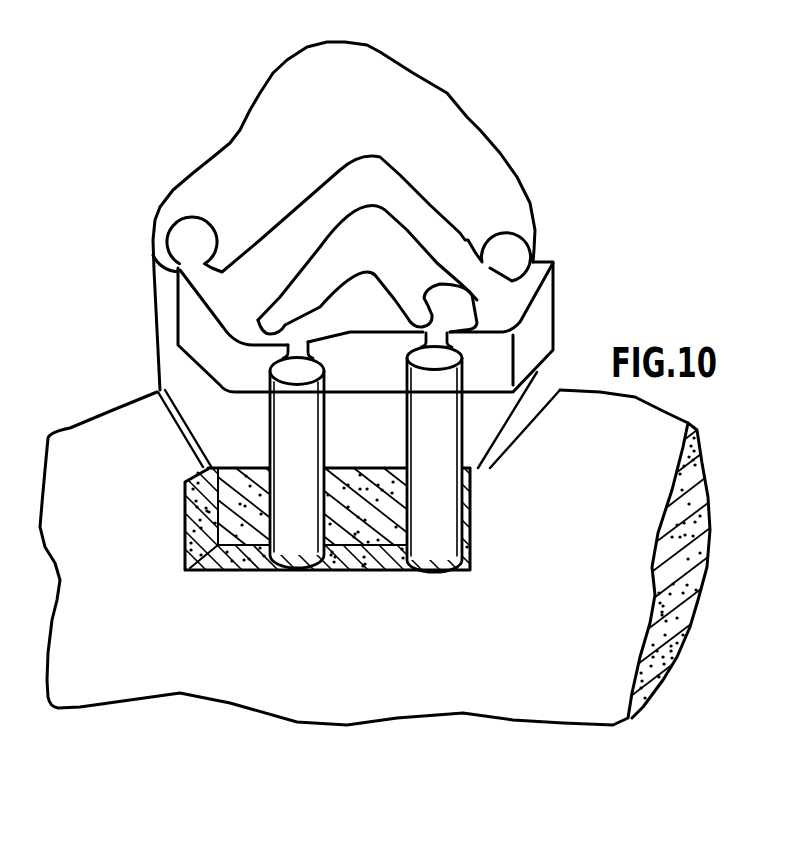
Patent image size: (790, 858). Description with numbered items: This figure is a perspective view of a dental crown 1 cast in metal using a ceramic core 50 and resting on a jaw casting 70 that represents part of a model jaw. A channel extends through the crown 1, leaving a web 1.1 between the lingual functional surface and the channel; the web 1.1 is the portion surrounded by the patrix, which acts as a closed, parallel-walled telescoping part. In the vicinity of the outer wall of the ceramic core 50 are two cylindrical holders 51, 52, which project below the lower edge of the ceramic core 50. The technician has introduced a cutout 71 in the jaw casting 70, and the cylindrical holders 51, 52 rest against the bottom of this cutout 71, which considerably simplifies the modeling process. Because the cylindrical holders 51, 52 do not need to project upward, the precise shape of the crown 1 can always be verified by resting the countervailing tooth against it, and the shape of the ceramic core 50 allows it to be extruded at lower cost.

The crown 1 is at (358, 216).
The web 1.1 is at (402, 242).
The ceramic core 50 is at (565, 306).
The cylindrical holder 51 is at (432, 568).
The cylindrical holder 52 is at (303, 566).
The jaw casting 70 is at (384, 684).
The cutout 71 is at (236, 562).